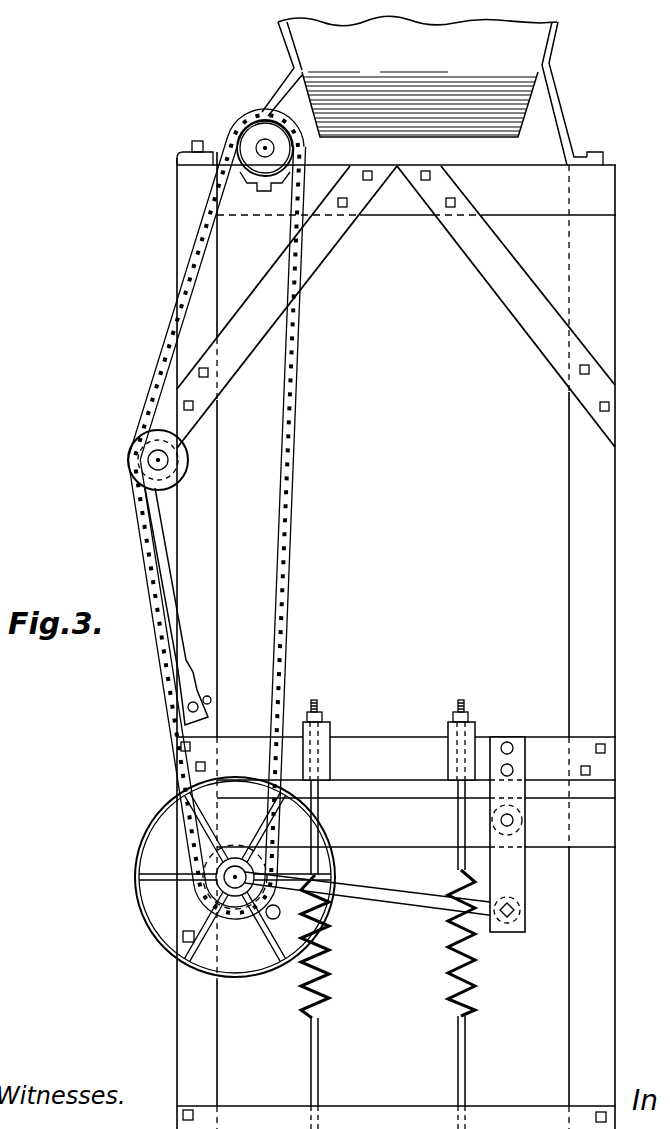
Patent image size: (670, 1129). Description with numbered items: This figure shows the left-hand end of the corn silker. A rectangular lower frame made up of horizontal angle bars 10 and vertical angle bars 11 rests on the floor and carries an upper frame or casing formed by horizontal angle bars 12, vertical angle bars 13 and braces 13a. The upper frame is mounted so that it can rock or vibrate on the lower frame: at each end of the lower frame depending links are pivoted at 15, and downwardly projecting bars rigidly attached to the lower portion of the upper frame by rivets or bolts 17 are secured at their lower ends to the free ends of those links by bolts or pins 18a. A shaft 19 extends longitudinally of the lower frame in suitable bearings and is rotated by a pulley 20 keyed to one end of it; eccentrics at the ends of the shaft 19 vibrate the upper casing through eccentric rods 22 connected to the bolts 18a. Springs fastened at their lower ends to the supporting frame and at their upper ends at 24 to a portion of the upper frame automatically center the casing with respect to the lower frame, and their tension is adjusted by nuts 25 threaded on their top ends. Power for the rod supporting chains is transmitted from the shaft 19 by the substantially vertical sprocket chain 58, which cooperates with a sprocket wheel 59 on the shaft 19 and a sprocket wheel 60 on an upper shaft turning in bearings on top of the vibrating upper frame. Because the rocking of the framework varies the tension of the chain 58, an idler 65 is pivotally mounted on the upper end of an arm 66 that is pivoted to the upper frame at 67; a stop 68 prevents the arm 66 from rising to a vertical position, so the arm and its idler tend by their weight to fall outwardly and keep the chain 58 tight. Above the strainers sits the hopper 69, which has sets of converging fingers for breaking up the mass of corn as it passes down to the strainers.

The horizontal angle bars 10 is at (396, 963).
The vertical angle bars 11 is at (396, 954).
The horizontal angle bars 12 is at (396, 472).
The vertical angle bars 13 is at (396, 460).
The braces 13a is at (396, 307).
The pivot 15 is at (514, 822).
The rivets or bolts 17 is at (514, 770).
The bolts or pins 18a is at (521, 910).
The shaft 19 is at (212, 893).
The pulley 20 is at (158, 946).
The eccentric rods 22 is at (382, 896).
The spring upper attachment 24 is at (471, 722).
The nuts 25 is at (462, 705).
The sprocket chain 58 is at (298, 590).
The sprocket wheel 59 is at (238, 845).
The sprocket wheel 60 is at (248, 183).
The idler 65 is at (132, 458).
The arm 66 is at (160, 556).
The arm pivot 67 is at (180, 716).
The stop 68 is at (212, 700).
The hopper 69 is at (424, 90).